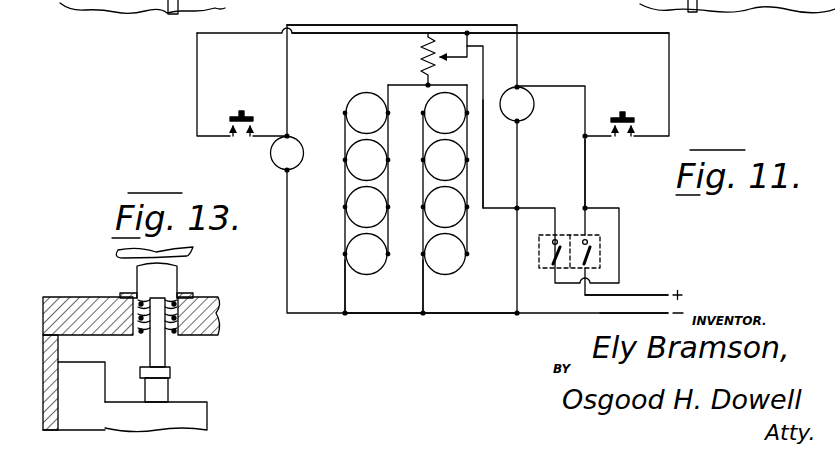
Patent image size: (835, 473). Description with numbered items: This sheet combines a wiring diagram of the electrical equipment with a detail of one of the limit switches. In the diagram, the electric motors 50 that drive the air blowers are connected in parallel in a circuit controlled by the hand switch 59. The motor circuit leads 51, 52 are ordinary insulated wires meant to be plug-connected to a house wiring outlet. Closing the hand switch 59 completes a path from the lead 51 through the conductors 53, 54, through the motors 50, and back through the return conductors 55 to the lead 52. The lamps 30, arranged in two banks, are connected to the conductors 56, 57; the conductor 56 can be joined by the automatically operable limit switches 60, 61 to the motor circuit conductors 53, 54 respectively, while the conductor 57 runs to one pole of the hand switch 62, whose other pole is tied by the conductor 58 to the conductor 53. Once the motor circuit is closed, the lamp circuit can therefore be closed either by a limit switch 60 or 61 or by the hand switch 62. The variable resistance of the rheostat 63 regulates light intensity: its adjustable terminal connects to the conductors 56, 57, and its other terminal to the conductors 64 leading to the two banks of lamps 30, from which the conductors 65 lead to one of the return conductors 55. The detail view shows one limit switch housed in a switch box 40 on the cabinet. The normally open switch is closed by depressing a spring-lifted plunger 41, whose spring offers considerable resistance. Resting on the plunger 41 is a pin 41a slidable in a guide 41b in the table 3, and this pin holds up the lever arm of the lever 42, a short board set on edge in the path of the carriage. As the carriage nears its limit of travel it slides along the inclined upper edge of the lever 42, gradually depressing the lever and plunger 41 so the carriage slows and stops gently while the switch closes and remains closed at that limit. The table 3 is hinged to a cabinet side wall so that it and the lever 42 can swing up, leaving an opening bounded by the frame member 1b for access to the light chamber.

In FIG. 11, the conductor 54 is at (402, 14).
In FIG. 11, the conductor 56 is at (428, 32).
In FIG. 11, the rheostat 63 is at (416, 55).
In FIG. 11, the limit switch 61 is at (226, 116).
In FIG. 11, the limit switch 60 is at (647, 108).
In FIG. 11, the electric motor 50 is at (272, 160).
In FIG. 11, the conductor 64 is at (457, 91).
In FIG. 11, the lamp 30 is at (356, 198).
In FIG. 11, the conductor 65 is at (345, 292).
In FIG. 11, the return conductor 55 is at (515, 291).
In FIG. 11, the conductor 57 is at (483, 179).
In FIG. 11, the conductor 53 is at (585, 171).
In FIG. 11, the conductor 58 is at (620, 221).
In FIG. 11, the hand switch 59 is at (592, 250).
In FIG. 11, the hand switch 62 is at (547, 253).
In FIG. 11, the lead 51 is at (639, 295).
In FIG. 11, the lead 52 is at (648, 313).
In FIG. 13, the lever 42 is at (190, 257).
In FIG. 13, the pin 41a is at (145, 277).
In FIG. 13, the table 3 is at (207, 298).
In FIG. 13, the guide 41b is at (187, 337).
In FIG. 13, the plunger 41 is at (162, 390).
In FIG. 13, the switch box 40 is at (193, 417).
In FIG. 13, the frame member 1b is at (60, 345).